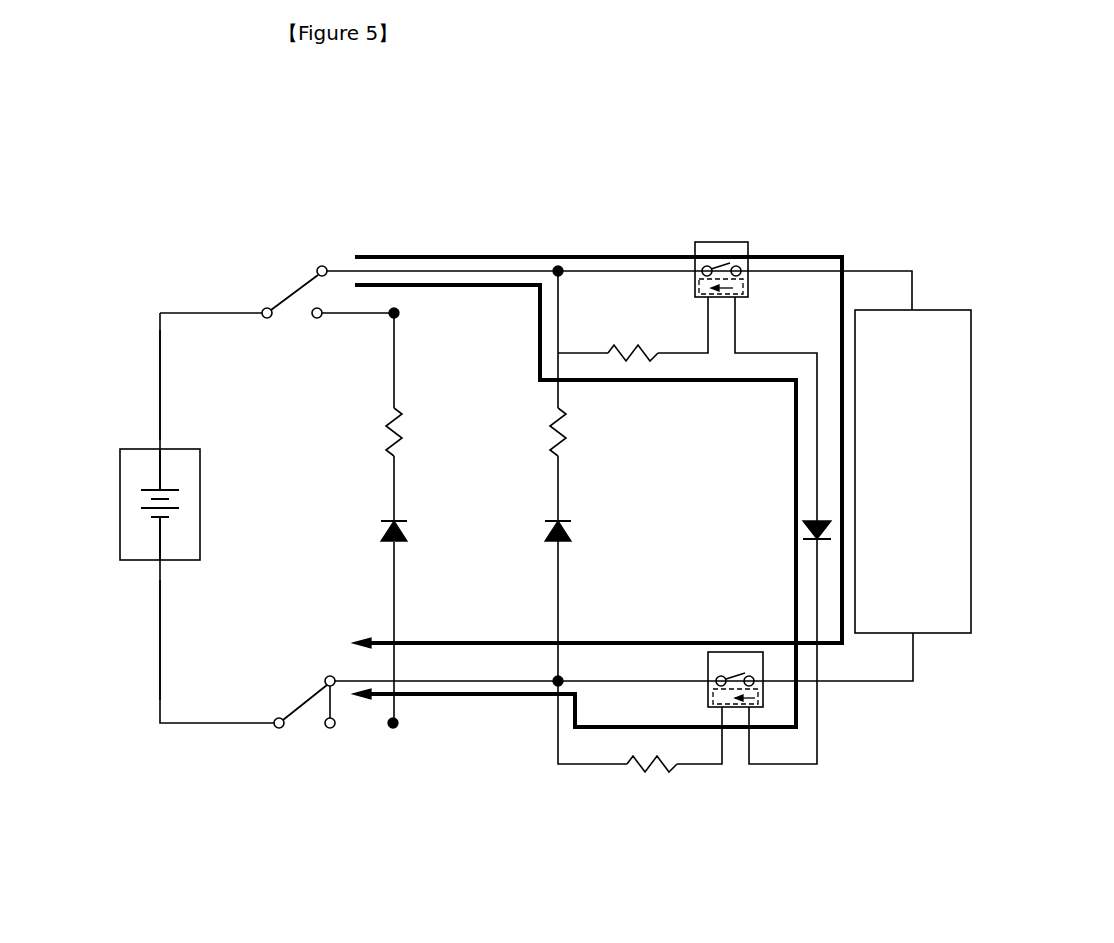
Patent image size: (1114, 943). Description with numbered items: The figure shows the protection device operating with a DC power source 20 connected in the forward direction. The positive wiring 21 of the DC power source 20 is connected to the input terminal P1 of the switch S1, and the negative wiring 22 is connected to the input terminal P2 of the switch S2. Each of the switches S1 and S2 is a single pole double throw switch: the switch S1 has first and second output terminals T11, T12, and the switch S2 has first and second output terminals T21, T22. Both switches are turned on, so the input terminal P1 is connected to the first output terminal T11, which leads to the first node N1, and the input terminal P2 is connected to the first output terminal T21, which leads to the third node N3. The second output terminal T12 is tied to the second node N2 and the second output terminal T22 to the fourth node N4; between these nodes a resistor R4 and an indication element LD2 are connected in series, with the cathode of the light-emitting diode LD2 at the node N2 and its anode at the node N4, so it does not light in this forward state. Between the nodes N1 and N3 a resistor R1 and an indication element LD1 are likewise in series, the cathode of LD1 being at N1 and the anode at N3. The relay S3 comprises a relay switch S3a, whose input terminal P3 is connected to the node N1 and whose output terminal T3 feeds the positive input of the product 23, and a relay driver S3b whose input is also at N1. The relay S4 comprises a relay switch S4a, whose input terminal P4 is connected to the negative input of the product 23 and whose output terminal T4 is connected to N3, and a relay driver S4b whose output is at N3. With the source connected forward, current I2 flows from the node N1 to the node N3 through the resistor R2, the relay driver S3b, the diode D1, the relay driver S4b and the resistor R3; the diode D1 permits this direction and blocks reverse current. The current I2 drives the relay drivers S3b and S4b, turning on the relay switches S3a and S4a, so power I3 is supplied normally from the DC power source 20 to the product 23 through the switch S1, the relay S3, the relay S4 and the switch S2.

The DC power source 20 is at (120, 505).
The positive wiring 21 is at (159, 402).
The negative wiring 22 is at (160, 650).
The product 23 is at (972, 474).
The switch S1 is at (290, 291).
The switch S2 is at (300, 700).
The relay S3 is at (733, 241).
The relay switch S3a is at (720, 268).
The relay driver S3b is at (745, 290).
The relay S4 is at (748, 651).
The relay switch S4a is at (737, 678).
The relay driver S4b is at (763, 702).
The input terminal P1 is at (266, 329).
The input terminal P2 is at (280, 739).
The input terminal P3 is at (678, 245).
The input terminal P4 is at (778, 668).
The first output terminal T11 is at (321, 256).
The second output terminal T12 is at (318, 329).
The first output terminal T21 is at (331, 666).
The second output terminal T22 is at (328, 739).
The output terminal T3 is at (764, 245).
The output terminal T4 is at (691, 668).
The first node N1 is at (574, 280).
The second node N2 is at (411, 313).
The third node N3 is at (541, 670).
The fourth node N4 is at (410, 723).
The current I2 is at (463, 283).
The power I3 is at (585, 255).
The resistor R1 is at (568, 436).
The resistor R2 is at (635, 348).
The resistor R3 is at (672, 770).
The resistor R4 is at (386, 433).
The indication element LD1 is at (574, 532).
The indication element LD2 is at (410, 532).
The diode D1 is at (803, 529).